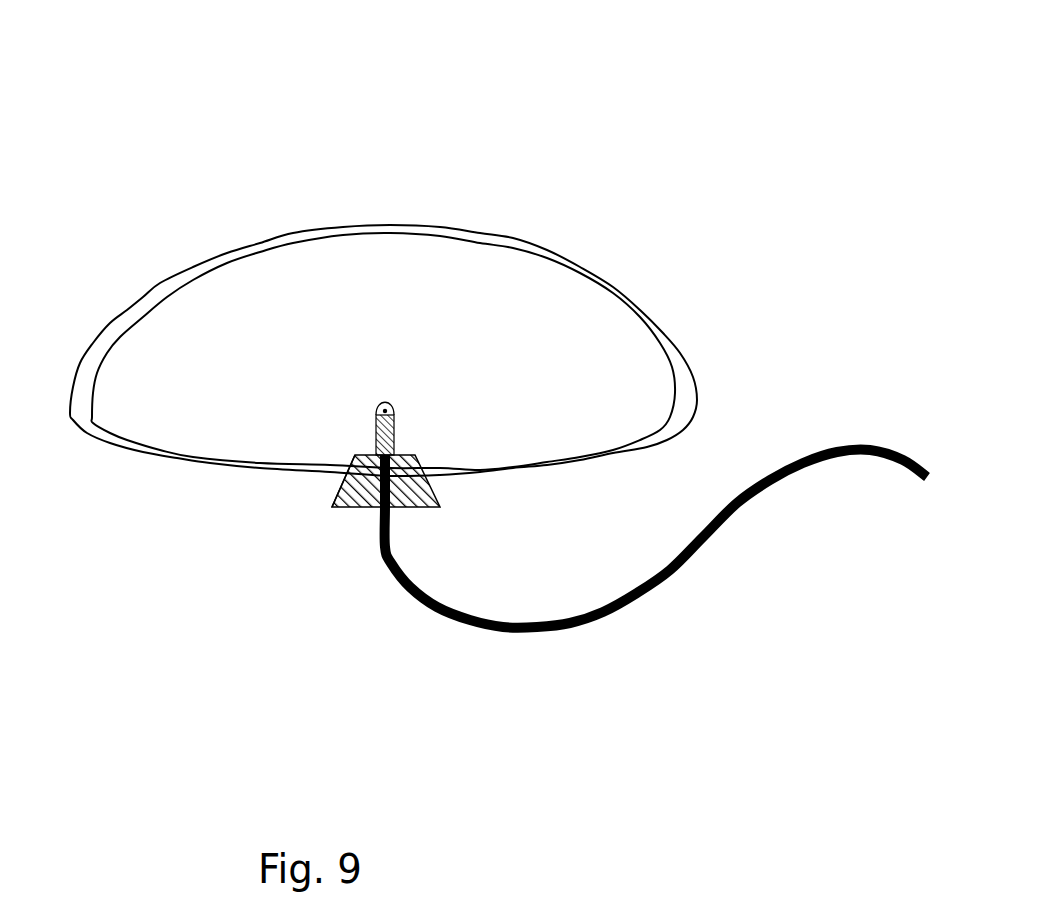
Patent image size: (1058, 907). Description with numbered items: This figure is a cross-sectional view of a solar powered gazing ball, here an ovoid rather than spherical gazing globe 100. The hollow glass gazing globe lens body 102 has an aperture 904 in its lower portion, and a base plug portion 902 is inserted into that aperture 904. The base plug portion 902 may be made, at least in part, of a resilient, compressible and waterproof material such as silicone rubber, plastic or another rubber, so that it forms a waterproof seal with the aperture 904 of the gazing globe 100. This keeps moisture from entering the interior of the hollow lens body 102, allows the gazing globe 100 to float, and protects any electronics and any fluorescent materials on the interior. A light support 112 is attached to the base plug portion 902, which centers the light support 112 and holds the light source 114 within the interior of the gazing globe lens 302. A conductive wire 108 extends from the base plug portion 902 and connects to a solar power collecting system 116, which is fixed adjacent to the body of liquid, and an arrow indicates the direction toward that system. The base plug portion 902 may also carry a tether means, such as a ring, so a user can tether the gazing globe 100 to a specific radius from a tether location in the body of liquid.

The gazing globe 100 is at (362, 347).
The gazing globe lens body 102 is at (462, 225).
The conductive wire 108 is at (600, 642).
The light support 112 is at (477, 282).
The light source 114 is at (385, 395).
The solar power collecting system 116 is at (892, 410).
The interior of the gazing globe lens 302 is at (173, 382).
The base plug portion 902 is at (247, 557).
The aperture 904 is at (335, 483).